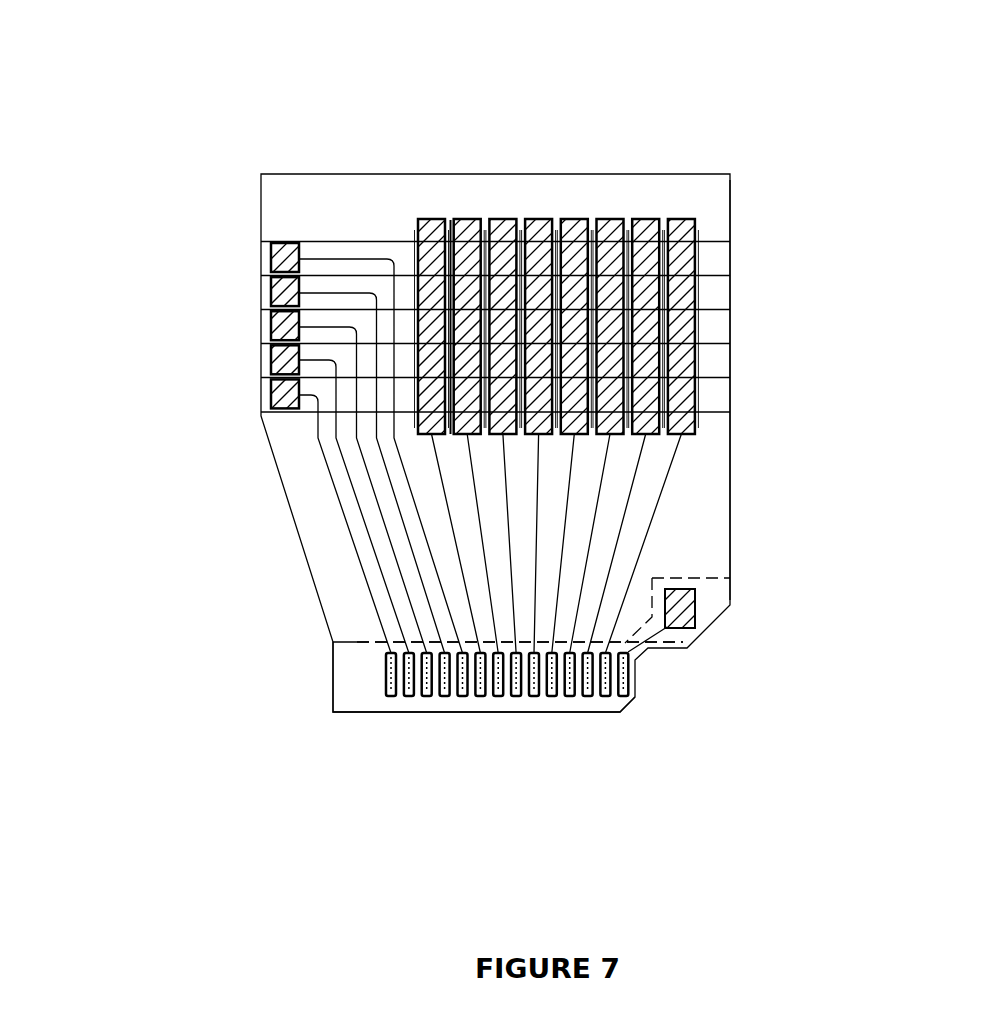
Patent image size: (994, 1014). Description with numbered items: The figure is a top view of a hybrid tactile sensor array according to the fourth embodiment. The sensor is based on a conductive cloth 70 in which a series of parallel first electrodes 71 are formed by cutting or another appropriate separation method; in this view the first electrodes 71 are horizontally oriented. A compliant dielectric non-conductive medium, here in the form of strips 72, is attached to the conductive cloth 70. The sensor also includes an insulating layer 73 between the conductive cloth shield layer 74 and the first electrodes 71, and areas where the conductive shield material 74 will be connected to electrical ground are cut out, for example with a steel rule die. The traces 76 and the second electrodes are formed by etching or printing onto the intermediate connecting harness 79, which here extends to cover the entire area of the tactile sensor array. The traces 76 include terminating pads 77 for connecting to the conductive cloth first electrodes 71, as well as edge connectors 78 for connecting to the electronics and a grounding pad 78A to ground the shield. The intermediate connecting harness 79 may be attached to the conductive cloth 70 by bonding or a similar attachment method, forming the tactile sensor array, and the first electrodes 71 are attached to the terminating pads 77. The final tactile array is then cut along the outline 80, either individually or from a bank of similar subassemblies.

The conductive cloth 70 is at (210, 240).
The first electrodes 71 is at (402, 260).
The strips 72 is at (520, 237).
The insulating layer 73 is at (703, 576).
The conductive cloth shield layer 74 is at (358, 640).
The traces 76 is at (353, 493).
The terminating pads 77 is at (273, 322).
The edge connectors 78 is at (573, 692).
The grounding pad 78A is at (692, 603).
The intermediate connecting harness 79 is at (292, 715).
The outline 80 is at (730, 213).